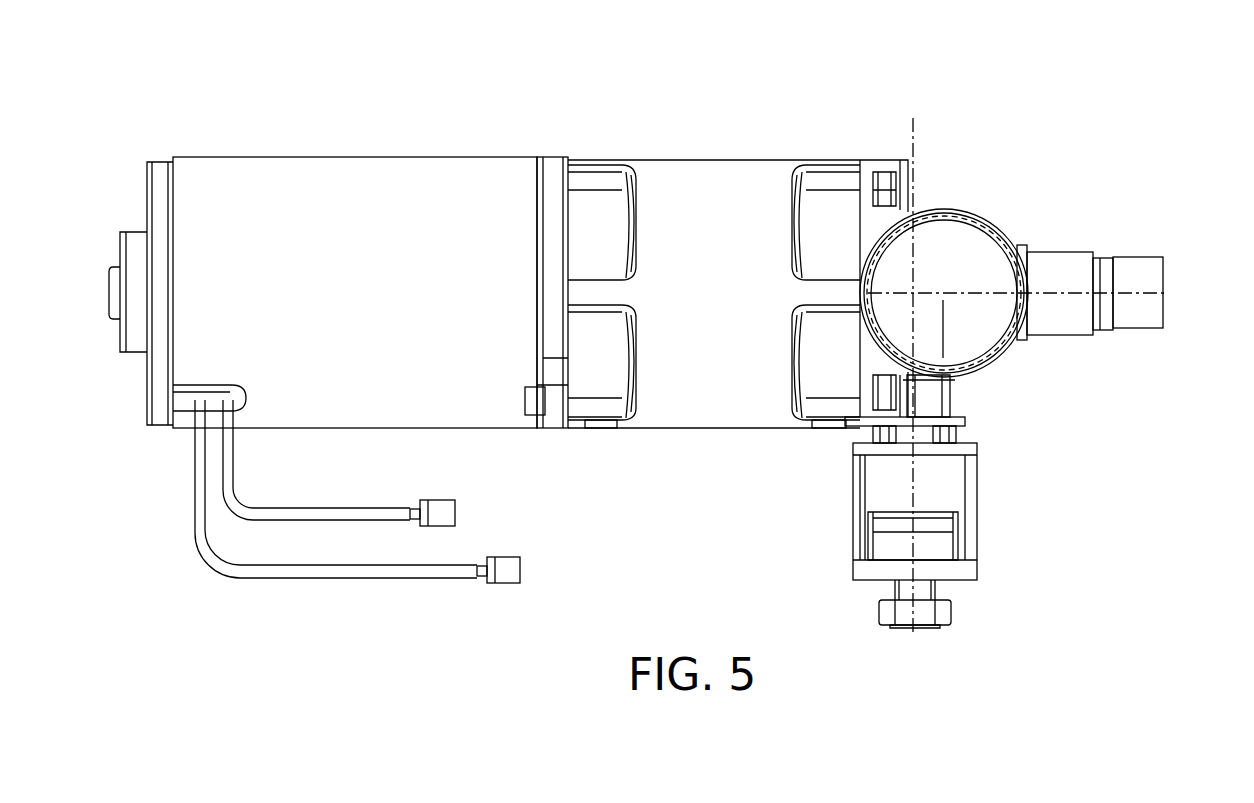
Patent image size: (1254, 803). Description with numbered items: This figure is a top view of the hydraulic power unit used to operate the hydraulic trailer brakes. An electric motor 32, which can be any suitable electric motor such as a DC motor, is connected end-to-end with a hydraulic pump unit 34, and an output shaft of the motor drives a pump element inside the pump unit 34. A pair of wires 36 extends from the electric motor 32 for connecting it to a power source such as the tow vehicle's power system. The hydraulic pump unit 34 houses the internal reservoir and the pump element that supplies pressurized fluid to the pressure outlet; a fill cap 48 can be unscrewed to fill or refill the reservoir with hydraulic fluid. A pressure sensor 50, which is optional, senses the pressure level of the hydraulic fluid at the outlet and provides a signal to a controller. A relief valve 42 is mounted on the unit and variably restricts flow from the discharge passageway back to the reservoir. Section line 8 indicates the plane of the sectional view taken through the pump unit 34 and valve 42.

The section view line 8- 8 is at (913, 118).
The electric motor 32 is at (405, 157).
The hydraulic pump unit 34 is at (688, 180).
The pair of wires 36 is at (383, 523).
The relief valve 42 is at (950, 488).
The fill cap 48 is at (980, 250).
The pressure sensor 50 is at (1140, 265).